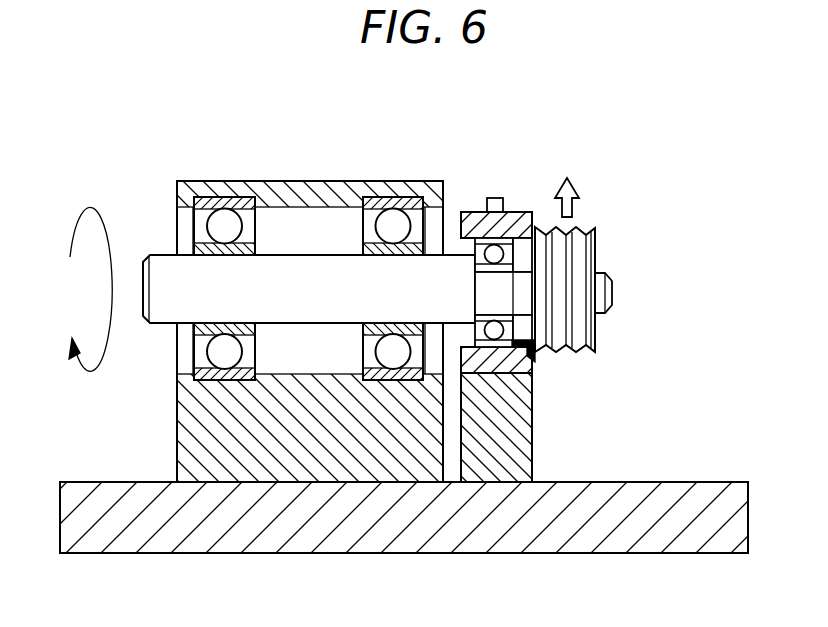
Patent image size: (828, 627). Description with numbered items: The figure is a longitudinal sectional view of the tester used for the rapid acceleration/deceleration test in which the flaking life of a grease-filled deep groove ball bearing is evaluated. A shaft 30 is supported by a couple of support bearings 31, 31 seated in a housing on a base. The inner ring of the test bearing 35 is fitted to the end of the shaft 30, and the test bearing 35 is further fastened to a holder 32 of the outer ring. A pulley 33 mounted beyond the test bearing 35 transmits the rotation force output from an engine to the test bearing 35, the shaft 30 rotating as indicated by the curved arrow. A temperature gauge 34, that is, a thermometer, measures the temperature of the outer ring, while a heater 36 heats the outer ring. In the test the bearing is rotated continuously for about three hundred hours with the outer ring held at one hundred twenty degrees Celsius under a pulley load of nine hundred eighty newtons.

The shaft 30 is at (158, 267).
The support bearings 31 is at (363, 179).
The holder 32 is at (481, 212).
The pulley 33 is at (578, 238).
The temperature gauge 34 is at (535, 360).
The test bearing 35 is at (466, 212).
The heater 36 is at (498, 201).